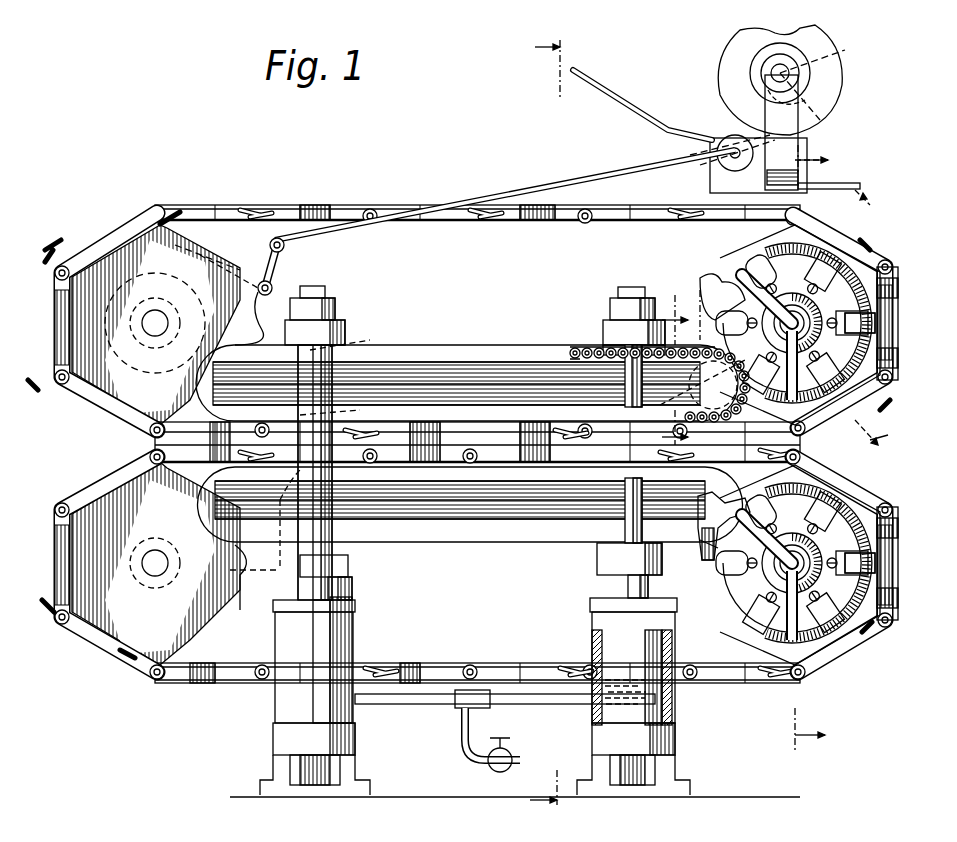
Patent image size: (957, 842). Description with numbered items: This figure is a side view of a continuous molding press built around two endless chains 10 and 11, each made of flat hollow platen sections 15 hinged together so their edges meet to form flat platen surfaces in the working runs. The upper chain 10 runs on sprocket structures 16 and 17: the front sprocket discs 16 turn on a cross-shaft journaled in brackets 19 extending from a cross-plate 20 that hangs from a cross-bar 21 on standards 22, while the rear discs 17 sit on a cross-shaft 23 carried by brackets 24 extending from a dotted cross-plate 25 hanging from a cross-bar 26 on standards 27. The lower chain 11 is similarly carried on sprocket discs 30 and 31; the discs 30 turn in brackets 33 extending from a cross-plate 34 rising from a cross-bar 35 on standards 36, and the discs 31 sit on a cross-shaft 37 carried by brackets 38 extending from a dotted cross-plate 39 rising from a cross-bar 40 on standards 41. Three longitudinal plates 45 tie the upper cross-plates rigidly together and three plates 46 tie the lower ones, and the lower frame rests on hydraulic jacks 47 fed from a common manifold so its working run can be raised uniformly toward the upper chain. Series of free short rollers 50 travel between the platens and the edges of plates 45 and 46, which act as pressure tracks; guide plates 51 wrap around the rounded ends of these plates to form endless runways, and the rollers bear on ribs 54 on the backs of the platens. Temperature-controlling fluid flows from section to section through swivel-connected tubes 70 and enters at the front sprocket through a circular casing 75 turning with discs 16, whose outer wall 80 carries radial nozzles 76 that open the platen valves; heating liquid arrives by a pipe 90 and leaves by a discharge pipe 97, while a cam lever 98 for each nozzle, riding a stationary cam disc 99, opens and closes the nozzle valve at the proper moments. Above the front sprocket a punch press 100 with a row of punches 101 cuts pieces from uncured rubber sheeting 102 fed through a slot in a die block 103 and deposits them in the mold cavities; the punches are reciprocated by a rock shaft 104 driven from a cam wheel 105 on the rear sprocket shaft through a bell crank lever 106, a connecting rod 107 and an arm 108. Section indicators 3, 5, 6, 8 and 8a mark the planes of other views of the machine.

The section line 3 is at (820, 447).
The section line 5 is at (556, 425).
The section line 6 is at (685, 372).
The section line 8 is at (786, 265).
The section line 8a is at (883, 432).
The endless chain 10 is at (185, 203).
The endless chain 11 is at (183, 686).
The platen sections 15 is at (128, 205).
The sprocket structure 16 is at (735, 275).
The sprocket structure 17 is at (165, 270).
The brackets 19 is at (705, 372).
The cross-plate 20 is at (628, 382).
The cross-bar 21 is at (603, 332).
The standards 22 is at (625, 287).
The cross-shaft 23 is at (155, 318).
The brackets 24 is at (280, 330).
The cross-plate 25 is at (335, 358).
The cross-bar 26 is at (346, 330).
The standards 27 is at (312, 637).
The sprocket structure 30 is at (735, 610).
The sprocket structure 31 is at (195, 625).
The brackets 33 is at (705, 542).
The cross-plate 34 is at (625, 520).
The cross-bar 35 is at (597, 562).
The standards 36 is at (628, 584).
The cross-shaft 37 is at (160, 557).
The brackets 38 is at (243, 548).
The cross-plate 39 is at (290, 575).
The cross-bar 40 is at (348, 562).
The standards 41 is at (340, 585).
The longitudinally extending plates 45 is at (480, 362).
The longitudinally extending plates 46 is at (520, 535).
The hydraulic jacks 47 is at (285, 693).
The free short rollers 50 is at (598, 360).
The guide plates 51 is at (430, 360).
The ribs 54 is at (385, 222).
The swivel-connected tubes 70 is at (477, 222).
The circular casing 75 is at (845, 305).
The nozzles 76 is at (860, 268).
The outer wall 80 is at (855, 545).
The pipe 90 is at (740, 285).
The discharge pipe 97 is at (855, 385).
The cam lever 98 is at (860, 345).
The stationary cam disc 99 is at (875, 322).
The punch press 100 is at (838, 166).
The punches 101 is at (820, 187).
The uncured rubber sheeting 102 is at (862, 186).
The die block 103 is at (712, 183).
The rock shaft 104 is at (812, 68).
The cam wheel 105 is at (222, 285).
The bell crank lever 106 is at (282, 250).
The connecting rod 107 is at (585, 160).
The arm 108 is at (805, 105).